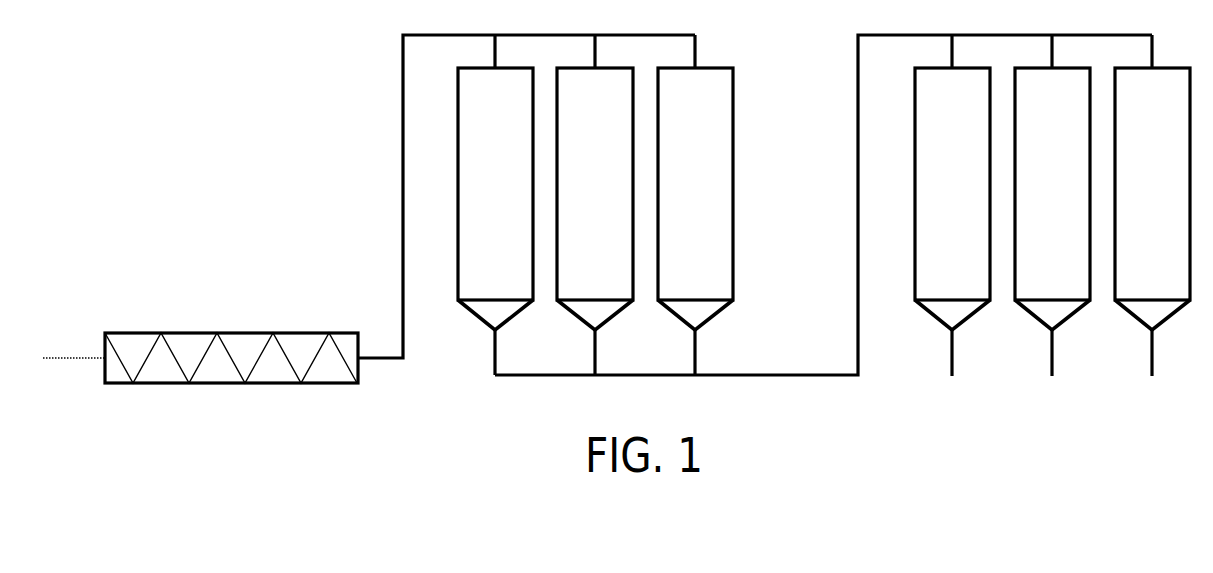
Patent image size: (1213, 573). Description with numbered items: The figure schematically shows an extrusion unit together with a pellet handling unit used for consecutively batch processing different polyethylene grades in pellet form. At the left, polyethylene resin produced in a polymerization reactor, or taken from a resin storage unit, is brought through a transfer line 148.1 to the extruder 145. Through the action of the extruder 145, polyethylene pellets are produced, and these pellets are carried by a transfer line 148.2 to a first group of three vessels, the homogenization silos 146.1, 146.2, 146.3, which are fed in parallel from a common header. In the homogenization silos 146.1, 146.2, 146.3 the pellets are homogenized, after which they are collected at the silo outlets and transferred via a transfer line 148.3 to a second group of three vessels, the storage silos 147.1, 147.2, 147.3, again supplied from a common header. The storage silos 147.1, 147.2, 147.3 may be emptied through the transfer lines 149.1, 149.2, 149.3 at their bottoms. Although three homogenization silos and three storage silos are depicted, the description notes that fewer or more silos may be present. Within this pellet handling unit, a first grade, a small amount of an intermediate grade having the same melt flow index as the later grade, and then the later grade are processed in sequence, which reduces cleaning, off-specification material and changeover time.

The extruder 145 is at (236, 332).
The homogenization silo 146.1 is at (523, 182).
The homogenization silo 146.2 is at (623, 182).
The homogenization silo 146.3 is at (723, 182).
The storage silo 147.1 is at (980, 182).
The storage silo 147.2 is at (1080, 182).
The storage silo 147.3 is at (1179, 182).
The transfer line 148.1 is at (73, 358).
The transfer line 148.2 is at (403, 128).
The transfer line 148.3 is at (858, 127).
The transfer line 149.1 is at (951, 357).
The transfer line 149.2 is at (1051, 357).
The transfer line 149.3 is at (1151, 357).